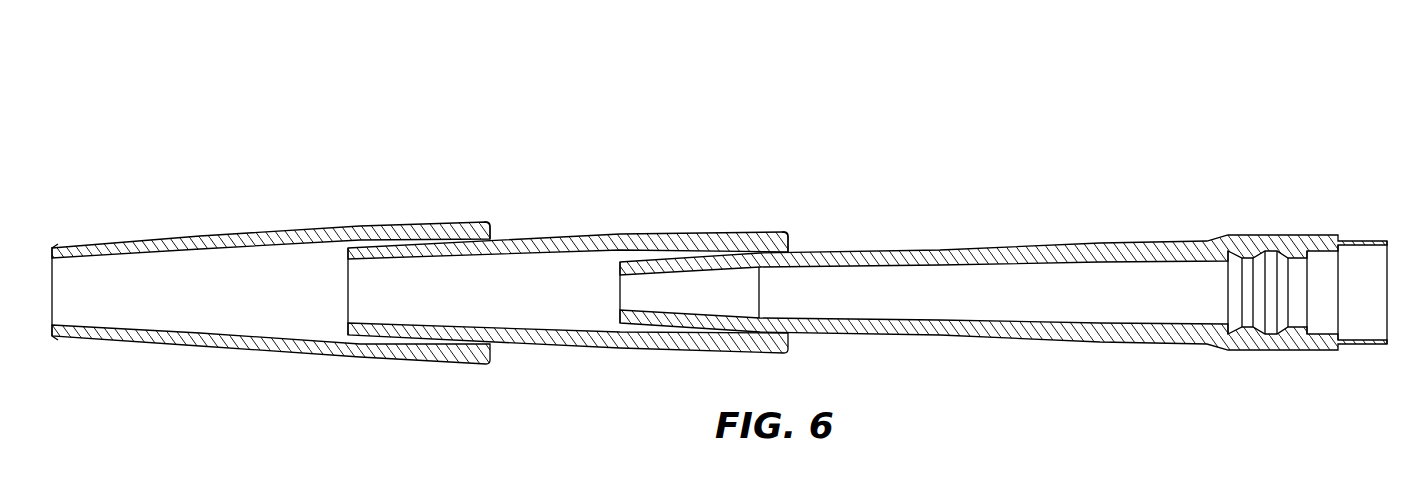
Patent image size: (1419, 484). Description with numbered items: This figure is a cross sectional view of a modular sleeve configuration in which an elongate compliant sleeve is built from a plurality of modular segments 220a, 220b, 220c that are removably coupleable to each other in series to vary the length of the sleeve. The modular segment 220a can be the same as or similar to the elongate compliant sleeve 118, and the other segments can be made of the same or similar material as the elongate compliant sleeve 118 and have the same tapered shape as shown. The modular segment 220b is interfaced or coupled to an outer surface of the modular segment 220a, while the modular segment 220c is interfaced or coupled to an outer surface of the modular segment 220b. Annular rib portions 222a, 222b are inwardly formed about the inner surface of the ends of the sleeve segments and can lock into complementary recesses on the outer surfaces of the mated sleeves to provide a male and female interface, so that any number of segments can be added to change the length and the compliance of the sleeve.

The elongate compliant sleeve 118 is at (675, 64).
The modular segment 220a is at (902, 226).
The modular segment 220b is at (646, 215).
The modular segment 220c is at (335, 212).
The annular rib portion 222a is at (778, 250).
The annular rib portion 222b is at (479, 236).